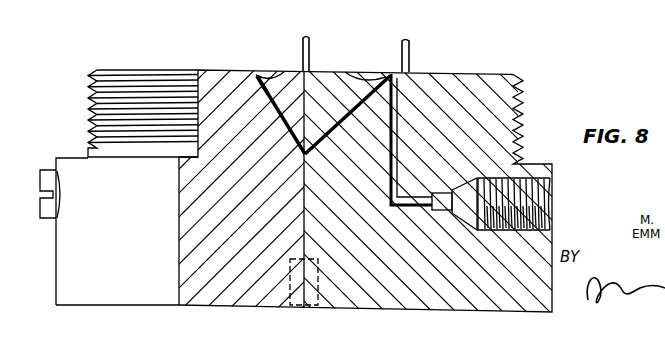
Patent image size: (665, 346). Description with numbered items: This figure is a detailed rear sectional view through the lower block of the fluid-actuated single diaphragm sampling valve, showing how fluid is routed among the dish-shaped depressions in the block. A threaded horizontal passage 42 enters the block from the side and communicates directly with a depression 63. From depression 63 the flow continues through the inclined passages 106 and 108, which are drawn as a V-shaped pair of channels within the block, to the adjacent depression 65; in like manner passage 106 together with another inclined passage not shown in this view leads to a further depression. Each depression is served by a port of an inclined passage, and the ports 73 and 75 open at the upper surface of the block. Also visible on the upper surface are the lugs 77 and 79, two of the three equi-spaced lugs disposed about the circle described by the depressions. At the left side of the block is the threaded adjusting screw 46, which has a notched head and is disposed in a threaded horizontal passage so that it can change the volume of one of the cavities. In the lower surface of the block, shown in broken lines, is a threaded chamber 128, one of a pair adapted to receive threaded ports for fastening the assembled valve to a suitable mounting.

The threaded horizontal passage 42 is at (543, 165).
The threaded adjusting screw 46 is at (45, 171).
The depression 63 is at (372, 79).
The depression 65 is at (279, 72).
The port 73 is at (393, 70).
The port 75 is at (263, 73).
The lug 77 is at (310, 43).
The lug 79 is at (410, 41).
The inclined passage 106 is at (325, 137).
The inclined passage 108 is at (272, 110).
The threaded chamber 128 is at (290, 307).